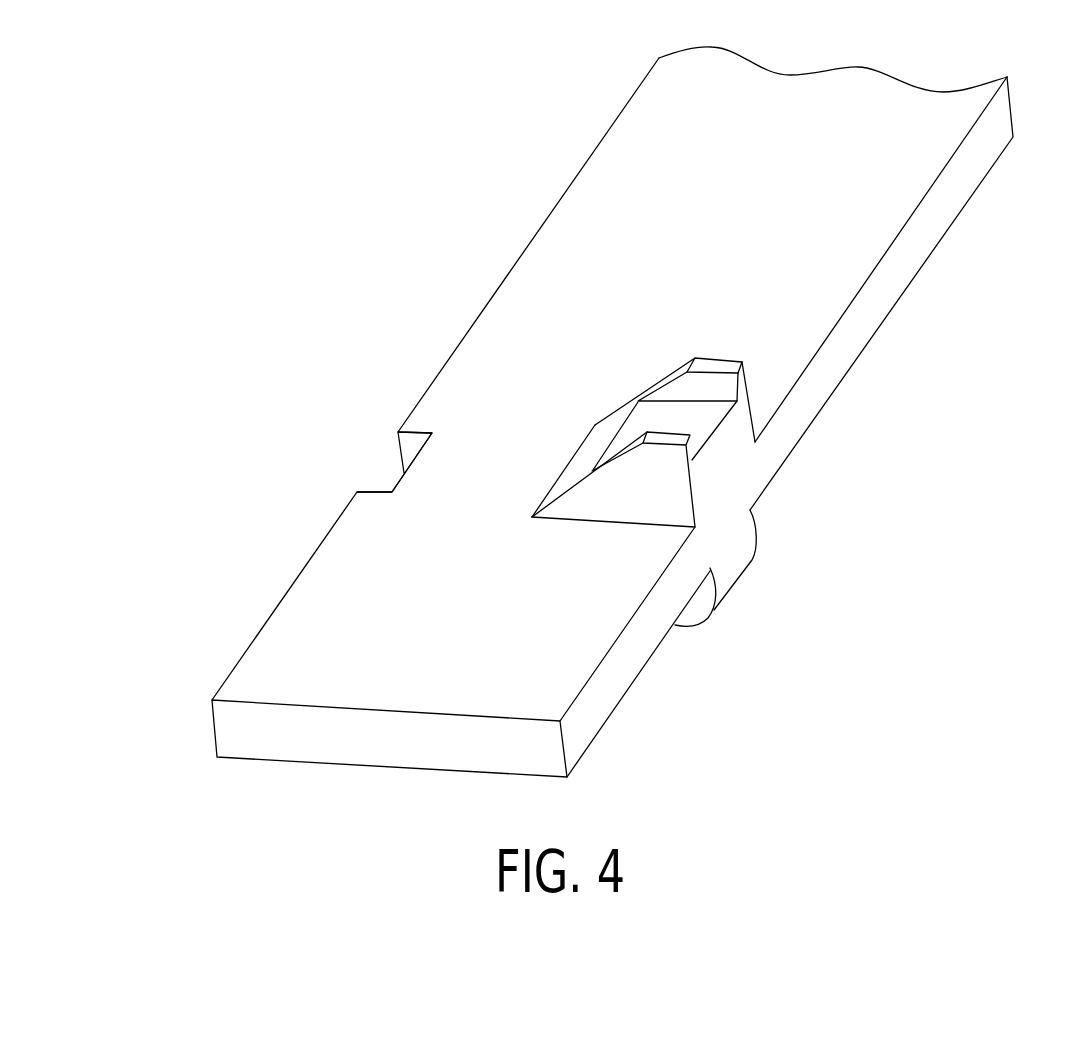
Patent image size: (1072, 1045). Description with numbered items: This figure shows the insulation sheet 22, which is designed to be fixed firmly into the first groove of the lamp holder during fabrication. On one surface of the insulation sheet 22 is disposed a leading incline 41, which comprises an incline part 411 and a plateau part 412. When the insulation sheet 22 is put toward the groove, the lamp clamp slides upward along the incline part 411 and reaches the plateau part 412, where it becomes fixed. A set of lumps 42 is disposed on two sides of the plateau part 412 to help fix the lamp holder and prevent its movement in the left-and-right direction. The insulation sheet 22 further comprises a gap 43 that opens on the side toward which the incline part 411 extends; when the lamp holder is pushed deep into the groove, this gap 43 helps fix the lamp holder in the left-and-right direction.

The insulation sheet 22 is at (457, 132).
The leading incline 41 is at (481, 397).
The incline part 411 is at (597, 443).
The plateau part 412 is at (673, 418).
The set of lumps 42 is at (717, 368).
The gap 43 is at (403, 473).